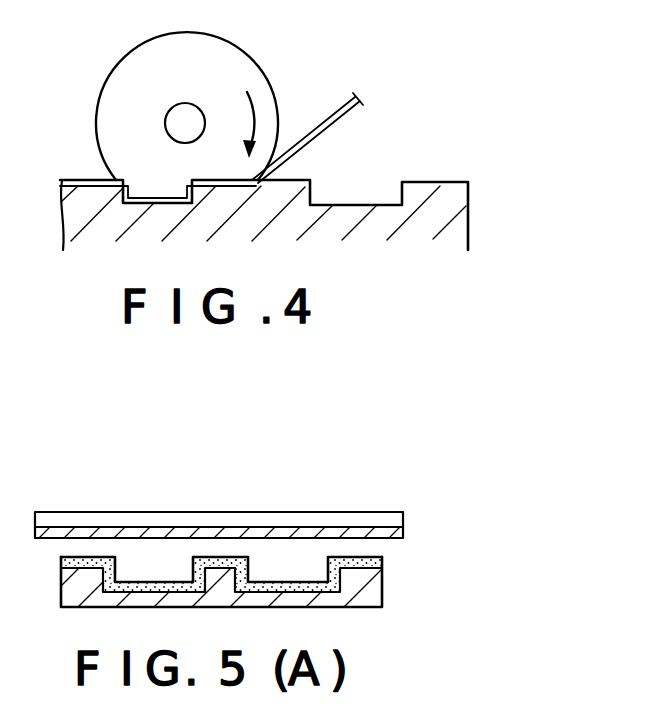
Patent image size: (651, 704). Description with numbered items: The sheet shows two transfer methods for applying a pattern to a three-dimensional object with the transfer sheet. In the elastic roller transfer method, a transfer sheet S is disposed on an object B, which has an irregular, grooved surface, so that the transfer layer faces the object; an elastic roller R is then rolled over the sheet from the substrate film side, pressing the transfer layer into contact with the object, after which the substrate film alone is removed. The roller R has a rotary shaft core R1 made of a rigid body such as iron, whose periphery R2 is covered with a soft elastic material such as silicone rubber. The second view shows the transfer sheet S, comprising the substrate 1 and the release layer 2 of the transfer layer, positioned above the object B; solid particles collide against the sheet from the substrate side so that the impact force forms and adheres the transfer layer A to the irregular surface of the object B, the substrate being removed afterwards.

In FIG. 4, the roller R is at (181, 90).
In FIG. 4, the roller shaft (inner circle of roller) R1 is at (167, 121).
In FIG. 4, the roller outer circumference R2 is at (132, 66).
In FIG. 4, the photosensitive resin sheet (laminate film) S is at (340, 117).
In FIG. 5A, the photosensitive resin sheet (laminate film) S is at (280, 513).
In FIG. 4, the substrate having surface irregularities B is at (460, 222).
In FIG. 5A, the substrate having surface irregularities B is at (372, 595).
In FIG. 5A, the substrate 1 is at (394, 516).
In FIG. 5A, the release layer 2 is at (253, 536).
In FIG. 5A, the photosensitive resin layer transferred onto substrate A is at (381, 559).